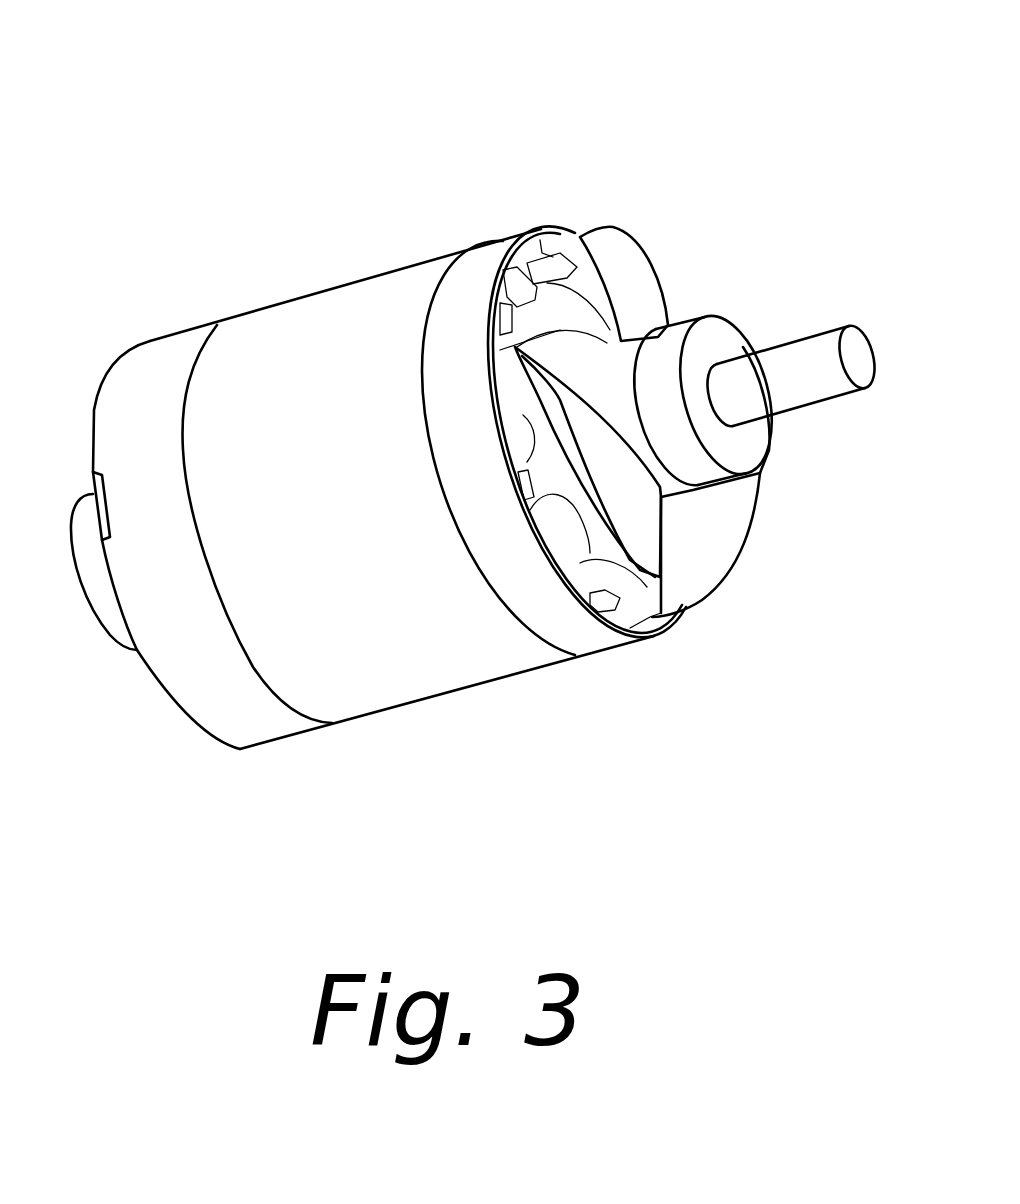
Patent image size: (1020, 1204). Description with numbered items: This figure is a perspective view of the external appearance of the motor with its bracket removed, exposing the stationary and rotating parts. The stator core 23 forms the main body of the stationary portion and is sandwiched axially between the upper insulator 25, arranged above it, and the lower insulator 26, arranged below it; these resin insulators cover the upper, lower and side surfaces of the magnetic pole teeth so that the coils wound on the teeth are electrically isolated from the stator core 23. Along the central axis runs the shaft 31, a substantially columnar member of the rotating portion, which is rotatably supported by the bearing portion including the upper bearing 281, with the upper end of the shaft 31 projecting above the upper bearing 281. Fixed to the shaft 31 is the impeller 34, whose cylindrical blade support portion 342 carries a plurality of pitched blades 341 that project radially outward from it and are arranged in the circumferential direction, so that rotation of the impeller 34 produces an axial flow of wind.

The stator core 23 is at (330, 327).
The upper insulator 25 is at (468, 282).
The lower insulator 26 is at (155, 367).
The impeller 34 is at (636, 77).
The blade 341 is at (622, 253).
The blade support portion 342 is at (603, 385).
The upper bearing 281 is at (667, 343).
The shaft 31 is at (792, 373).